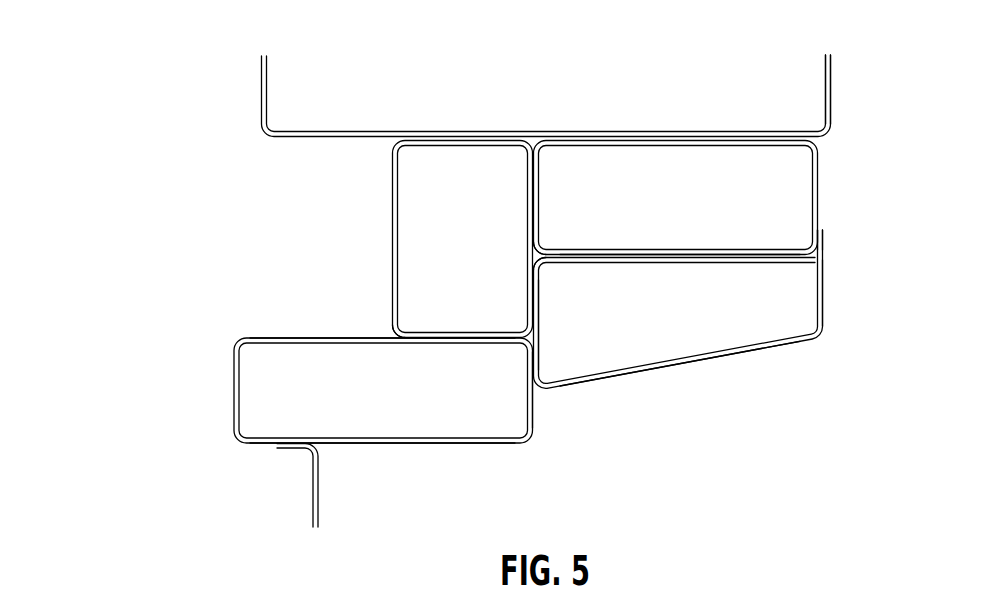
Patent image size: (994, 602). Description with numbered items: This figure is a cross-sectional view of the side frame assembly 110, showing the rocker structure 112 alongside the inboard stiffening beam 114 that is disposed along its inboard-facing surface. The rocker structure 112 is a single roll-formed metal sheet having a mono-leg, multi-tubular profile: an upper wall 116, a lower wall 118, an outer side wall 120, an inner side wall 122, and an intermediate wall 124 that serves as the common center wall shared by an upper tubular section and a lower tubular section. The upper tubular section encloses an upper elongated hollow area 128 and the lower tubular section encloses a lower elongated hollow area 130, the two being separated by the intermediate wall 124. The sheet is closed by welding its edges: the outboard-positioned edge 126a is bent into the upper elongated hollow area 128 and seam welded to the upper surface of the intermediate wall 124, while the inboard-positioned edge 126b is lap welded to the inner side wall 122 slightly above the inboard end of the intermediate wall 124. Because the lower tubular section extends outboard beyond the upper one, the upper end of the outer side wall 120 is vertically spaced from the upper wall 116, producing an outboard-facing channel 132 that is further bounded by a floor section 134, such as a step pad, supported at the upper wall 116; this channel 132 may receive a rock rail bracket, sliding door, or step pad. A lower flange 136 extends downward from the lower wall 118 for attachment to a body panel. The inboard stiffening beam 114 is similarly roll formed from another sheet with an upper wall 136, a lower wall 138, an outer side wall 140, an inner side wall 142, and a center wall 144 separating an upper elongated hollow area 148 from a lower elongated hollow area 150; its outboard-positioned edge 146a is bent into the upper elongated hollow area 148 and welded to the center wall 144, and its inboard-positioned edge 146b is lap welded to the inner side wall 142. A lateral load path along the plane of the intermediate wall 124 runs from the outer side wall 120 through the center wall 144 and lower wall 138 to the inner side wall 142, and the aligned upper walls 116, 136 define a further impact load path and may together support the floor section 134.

The side frame assembly 110 is at (175, 82).
The rocker structure 112 is at (453, 460).
The inboard stiffening beam 114 is at (695, 387).
The upper wall 116 is at (462, 131).
The lower wall 118 is at (362, 443).
The outer side wall 120 is at (233, 385).
The inner side wall 122 is at (535, 420).
The intermediate wall 124 is at (290, 337).
The outboard-positioned edge 126a is at (415, 333).
The inboard-positioned edge 126b is at (532, 310).
The upper elongated hollow area 128 is at (475, 252).
The lower elongated hollow area 130 is at (397, 400).
The outboard-facing channel 132 is at (280, 233).
The floor section 134 is at (328, 131).
The lower flange 136 is at (673, 133).
The lower wall 138 is at (777, 357).
The outer side wall 140 is at (535, 360).
The inner side wall 142 is at (823, 300).
The center wall 144 is at (683, 253).
The outboard-positioned edge 146a is at (558, 248).
The inboard-positioned edge 146b is at (822, 240).
The upper elongated hollow area 148 is at (767, 217).
The lower elongated hollow area 150 is at (767, 320).